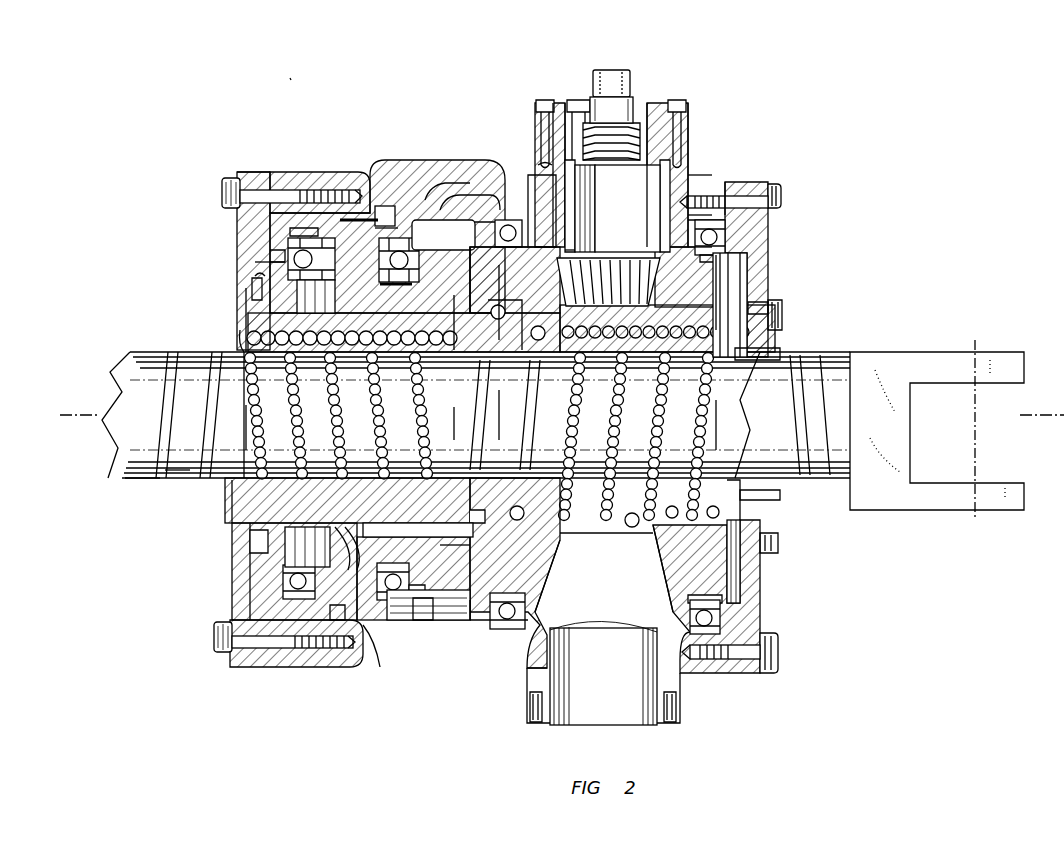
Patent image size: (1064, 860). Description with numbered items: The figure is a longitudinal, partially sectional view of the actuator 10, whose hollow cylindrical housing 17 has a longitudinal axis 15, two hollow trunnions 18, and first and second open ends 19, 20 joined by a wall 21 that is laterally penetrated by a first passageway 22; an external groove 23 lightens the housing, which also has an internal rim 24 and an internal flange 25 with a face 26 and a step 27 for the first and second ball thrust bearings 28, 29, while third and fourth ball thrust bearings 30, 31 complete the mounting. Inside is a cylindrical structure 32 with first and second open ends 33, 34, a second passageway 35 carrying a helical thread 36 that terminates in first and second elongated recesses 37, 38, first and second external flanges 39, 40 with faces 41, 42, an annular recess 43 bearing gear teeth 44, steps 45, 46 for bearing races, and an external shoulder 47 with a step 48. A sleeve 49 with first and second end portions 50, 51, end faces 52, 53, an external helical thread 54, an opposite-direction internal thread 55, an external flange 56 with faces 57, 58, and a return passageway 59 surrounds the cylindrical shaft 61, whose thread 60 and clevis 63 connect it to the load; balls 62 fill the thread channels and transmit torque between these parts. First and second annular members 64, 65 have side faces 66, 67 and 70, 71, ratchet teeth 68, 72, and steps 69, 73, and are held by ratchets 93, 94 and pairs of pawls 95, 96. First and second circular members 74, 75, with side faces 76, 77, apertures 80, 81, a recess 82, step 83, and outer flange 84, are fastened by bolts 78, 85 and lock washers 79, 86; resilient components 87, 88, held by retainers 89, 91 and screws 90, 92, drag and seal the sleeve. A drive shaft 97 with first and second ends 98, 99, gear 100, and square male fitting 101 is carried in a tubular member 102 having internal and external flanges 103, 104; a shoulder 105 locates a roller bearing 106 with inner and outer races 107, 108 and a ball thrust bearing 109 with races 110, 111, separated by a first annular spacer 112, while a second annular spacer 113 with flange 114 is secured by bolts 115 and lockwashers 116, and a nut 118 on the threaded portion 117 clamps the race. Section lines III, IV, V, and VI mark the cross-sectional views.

The actuator 10 is at (290, 78).
The longitudinal axis 15 is at (97, 412).
The housing 17 is at (350, 183).
The trunnions 18 is at (692, 180).
The first open end 19 is at (732, 178).
The second open end 20 is at (272, 195).
The wall 21 is at (292, 225).
The first passageway 22 is at (560, 195).
The external groove 23 is at (432, 210).
The internal rim 24 is at (725, 225).
The internal flange 25 is at (452, 222).
The face 26 is at (465, 225).
The step 27 is at (500, 633).
The first ball thrust bearing 28 is at (763, 618).
The second ball thrust bearing 29 is at (488, 620).
The third ball thrust bearing 30 is at (347, 537).
The fourth ball thrust bearing 31 is at (275, 572).
The cylindrical structure 32 is at (500, 566).
The first open end 33 is at (733, 272).
The second open end 34 is at (400, 540).
The second passageway 35 is at (713, 518).
The helical thread 36 is at (632, 525).
The first elongated recess 37 is at (695, 336).
The second elongated recess 38 is at (523, 335).
The first external flange 39 is at (655, 655).
The second external flange 40 is at (557, 637).
The first-flange face 41 is at (690, 617).
The second-flange face 42 is at (543, 647).
The annular recess 43 is at (606, 561).
The gear teeth 44 is at (604, 568).
The step 45 is at (510, 595).
The step 46 is at (678, 598).
The external shoulder 47 is at (415, 604).
The step 48 is at (410, 590).
The sleeve 49 is at (488, 512).
The first end portion 50 is at (672, 518).
The second end portion 51 is at (478, 575).
The end face 52 is at (777, 353).
The end face 53 is at (235, 345).
The external helical thread 54 is at (600, 350).
The internal thread 55 is at (273, 557).
The external flange 56 is at (385, 238).
The first face 57 is at (392, 279).
The second face 58 is at (327, 317).
The passageway 59 is at (237, 333).
The helical thread 60 is at (175, 478).
The cylindrical shaft 61 is at (153, 482).
The balls 62 is at (250, 463).
The clevis 63 is at (917, 512).
The first annular member 64 is at (333, 597).
The second annular member 65 is at (355, 640).
The first side face 66 is at (397, 250).
The second side face 67 is at (328, 296).
The ratchet teeth 68 is at (393, 212).
The circular step 69 is at (385, 580).
The first side face 70 is at (287, 223).
The second side face 71 is at (367, 248).
The ratchet teeth 72 is at (300, 602).
The step 73 is at (330, 540).
The first circular member 74 is at (770, 251).
The second circular member 75 is at (223, 607).
The side face 76 is at (735, 240).
The side face 77 is at (298, 228).
The bolts 78 is at (783, 195).
The lock washers 79 is at (773, 184).
The aperture 80 is at (753, 490).
The aperture 81 is at (257, 486).
The circular recess 82 is at (273, 257).
The circular step 83 is at (290, 587).
The outer flange 84 is at (262, 200).
The bolts 85 is at (224, 185).
The lock washers 86 is at (245, 180).
The first annular resilient component 87 is at (775, 517).
The second annular resilient component 88 is at (248, 535).
The first annular retainer 89 is at (770, 297).
The screws 90 is at (772, 313).
The second annular retainer 91 is at (262, 270).
The screws 92 is at (257, 275).
The ratchet 93 is at (400, 625).
The ratchet 94 is at (280, 650).
The first pair of pawls 95 is at (378, 230).
The second pair of pawls 96 is at (306, 246).
The drive shaft 97 is at (690, 205).
The first end 98 is at (503, 268).
The second end 99 is at (593, 123).
The gear 100 is at (650, 267).
The square male fitting 101 is at (618, 73).
The tubular member 102 is at (510, 222).
The internal flange 103 is at (567, 240).
The external flange 104 is at (538, 125).
The shoulder 105 is at (615, 175).
The roller bearing 106 is at (695, 215).
The inner race 107 is at (650, 225).
The outer race 108 is at (705, 230).
The ball thrust bearing 109 is at (580, 102).
The inner race 110 is at (590, 208).
The outer race 111 is at (552, 180).
The first annular spacer 112 is at (543, 190).
The second annular spacer 113 is at (665, 108).
The external flange 114 is at (685, 118).
The bolts 115 is at (548, 104).
The lockwashers 116 is at (542, 112).
The externally threaded portion 117 is at (607, 70).
The nut 118 is at (647, 110).
The section line III is at (713, 272).
The section line IV is at (497, 266).
The section line V is at (452, 300).
The section line VI is at (240, 297).